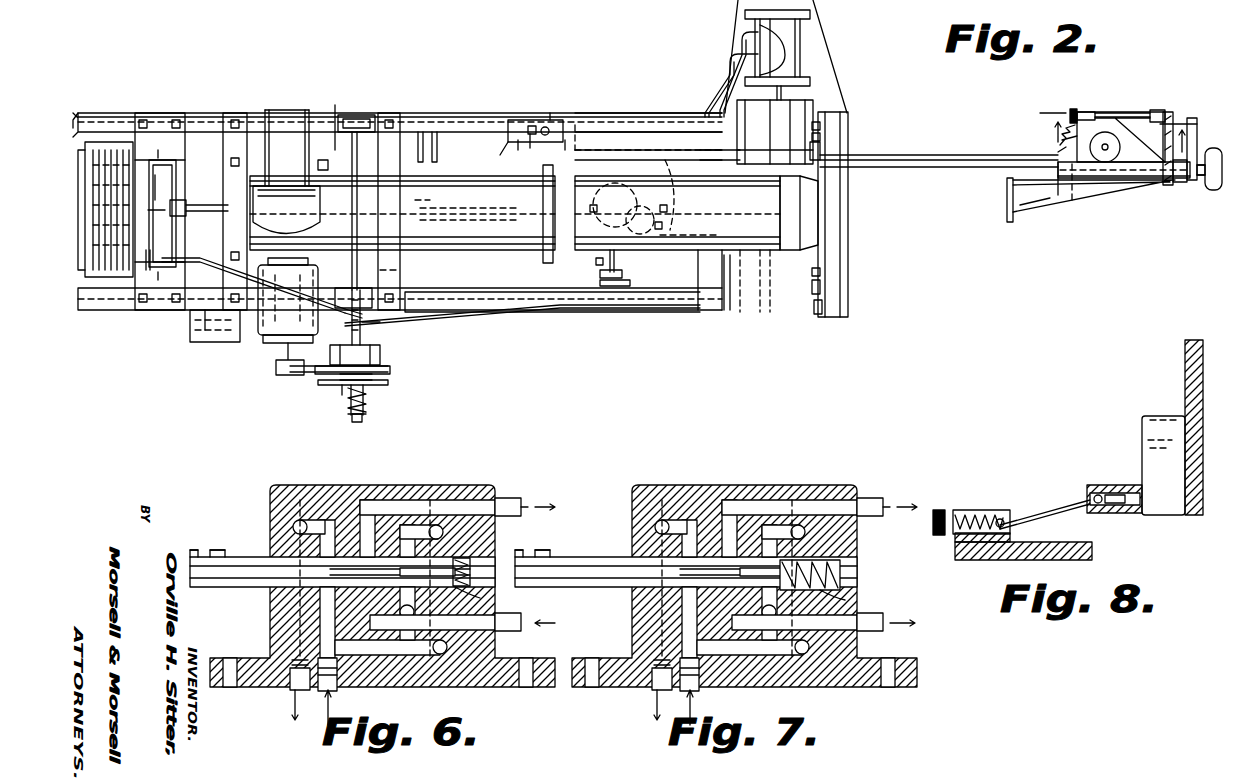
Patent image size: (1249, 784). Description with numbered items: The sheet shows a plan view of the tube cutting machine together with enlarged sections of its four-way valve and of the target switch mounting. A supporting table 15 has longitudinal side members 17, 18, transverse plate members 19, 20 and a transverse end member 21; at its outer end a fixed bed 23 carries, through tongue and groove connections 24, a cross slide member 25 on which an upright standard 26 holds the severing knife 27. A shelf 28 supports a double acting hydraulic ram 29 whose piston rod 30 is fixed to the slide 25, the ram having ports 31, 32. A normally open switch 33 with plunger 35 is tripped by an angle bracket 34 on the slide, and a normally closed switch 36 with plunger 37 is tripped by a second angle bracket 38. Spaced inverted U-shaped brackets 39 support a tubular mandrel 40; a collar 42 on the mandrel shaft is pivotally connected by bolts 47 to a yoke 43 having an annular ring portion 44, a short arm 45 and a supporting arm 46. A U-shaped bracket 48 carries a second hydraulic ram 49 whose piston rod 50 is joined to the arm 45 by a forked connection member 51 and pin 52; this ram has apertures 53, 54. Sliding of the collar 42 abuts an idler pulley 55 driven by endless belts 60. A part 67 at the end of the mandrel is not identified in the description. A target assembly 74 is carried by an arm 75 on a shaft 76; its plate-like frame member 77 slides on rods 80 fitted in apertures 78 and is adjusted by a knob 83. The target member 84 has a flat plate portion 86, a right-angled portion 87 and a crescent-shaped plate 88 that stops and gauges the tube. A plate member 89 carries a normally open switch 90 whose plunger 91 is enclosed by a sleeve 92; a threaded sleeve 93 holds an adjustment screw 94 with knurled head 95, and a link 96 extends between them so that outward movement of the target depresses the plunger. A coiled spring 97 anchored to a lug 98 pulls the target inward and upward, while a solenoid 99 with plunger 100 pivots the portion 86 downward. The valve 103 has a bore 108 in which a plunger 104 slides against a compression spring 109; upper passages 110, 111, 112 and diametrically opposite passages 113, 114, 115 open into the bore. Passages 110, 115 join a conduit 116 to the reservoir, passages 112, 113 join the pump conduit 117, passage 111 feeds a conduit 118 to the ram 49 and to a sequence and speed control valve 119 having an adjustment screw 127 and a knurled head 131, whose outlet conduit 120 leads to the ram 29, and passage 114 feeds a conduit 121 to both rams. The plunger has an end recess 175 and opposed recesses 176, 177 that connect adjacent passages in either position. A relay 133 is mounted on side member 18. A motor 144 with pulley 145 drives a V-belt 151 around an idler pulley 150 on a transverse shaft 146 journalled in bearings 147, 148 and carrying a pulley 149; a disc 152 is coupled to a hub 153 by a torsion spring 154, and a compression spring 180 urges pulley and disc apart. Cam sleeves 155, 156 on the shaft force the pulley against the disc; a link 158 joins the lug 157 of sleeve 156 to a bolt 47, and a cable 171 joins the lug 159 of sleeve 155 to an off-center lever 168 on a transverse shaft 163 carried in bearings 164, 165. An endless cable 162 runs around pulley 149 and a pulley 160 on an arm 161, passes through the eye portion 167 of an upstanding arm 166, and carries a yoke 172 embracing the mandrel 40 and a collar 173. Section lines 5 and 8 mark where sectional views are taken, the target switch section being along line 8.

In FIG. 2, the section line 5 is at (542, 151).
In FIG. 2, the section line 8 is at (1118, 124).
In FIG. 2, the supporting table 15 is at (214, 110).
In FIG. 2, the longitudinal side member 17 is at (458, 112).
In FIG. 2, the longitudinal side member 18 is at (512, 313).
In FIG. 2, the transverse plate member 19 is at (133, 112).
In FIG. 2, the transverse plate member 20 is at (603, 112).
In FIG. 2, the transverse end member 21 is at (848, 208).
In FIG. 2, the fixed transverse bed 23 is at (722, 315).
In FIG. 2, the tongue and groove connections 24 is at (778, 314).
In FIG. 2, the cross slide member 25 is at (738, 314).
In FIG. 2, the upright standard 26 is at (790, 125).
In FIG. 2, the severing knife 27 is at (740, 150).
In FIG. 2, the rearwardly projecting shelf 28 is at (820, 52).
In FIG. 2, the double acting hydraulic ram 29 is at (792, 30).
In FIG. 2, the piston rod 30 is at (783, 95).
In FIG. 2, the port 31 is at (740, 45).
In FIG. 2, the port 32 is at (730, 68).
In FIG. 2, the normally open electrical push button switch 33 is at (822, 152).
In FIG. 2, the angle bracket 34 is at (820, 125).
In FIG. 2, the plunger 35 is at (820, 137).
In FIG. 2, the normally closed electrical push button switch 36 is at (818, 316).
In FIG. 2, the plunger 37 is at (822, 288).
In FIG. 2, the angle bracket 38 is at (820, 272).
In FIG. 2, the inverted U-shaped brackets 39 is at (248, 112).
In FIG. 2, the horizontal tubular mandrel 40 is at (338, 252).
In FIG. 2, the annular collar 42 is at (148, 270).
In FIG. 2, the yoke 43 is at (190, 255).
In FIG. 2, the annular ring portion 44 is at (170, 168).
In FIG. 2, the short arm 45 is at (176, 203).
In FIG. 2, the supporting arm 46 is at (346, 166).
In FIG. 2, the bolts 47 is at (160, 157).
In FIG. 2, the U-shaped bracket 48 is at (352, 165).
In FIG. 2, the double-acting hydraulic ram 49 is at (285, 170).
In FIG. 2, the piston rod 50 is at (214, 214).
In FIG. 2, the forked connection member 51 is at (157, 186).
In FIG. 2, the pin 52 is at (150, 205).
In FIG. 2, the aperture 53 is at (280, 186).
In FIG. 2, the aperture 54 is at (312, 170).
In FIG. 2, the idler pulley 55 is at (78, 112).
In FIG. 2, the endless driving belts 60 is at (112, 292).
In FIG. 2, the end cap 67 is at (780, 206).
In FIG. 2, the target assembly 74 is at (1125, 112).
In FIG. 2, the arm 75 is at (1198, 118).
In FIG. 2, the shaft 76 is at (958, 170).
In FIG. 2, the plate-like frame member 77 is at (1060, 196).
In FIG. 2, the unthreaded apertures 78 is at (1072, 201).
In FIG. 2, the rods 80 is at (1180, 182).
In FIG. 2, the knob 83 is at (1222, 152).
In FIG. 2, the target member 84 is at (1115, 192).
In FIG. 2, the flat plate portion 86 is at (1092, 126).
In FIG. 8, the flat plate portion 86 is at (1093, 550).
In FIG. 2, the right-angled portion 87 is at (1043, 203).
In FIG. 2, the crescent-shaped plate member 88 is at (1005, 204).
In FIG. 2, the rectangular plate member 89 is at (1174, 112).
In FIG. 8, the rectangular plate member 89 is at (1204, 375).
In FIG. 2, the normally open electrical push button switch 90 is at (1160, 110).
In FIG. 8, the normally open electrical push button switch 90 is at (1148, 415).
In FIG. 8, the plunger 91 is at (1116, 493).
In FIG. 8, the sleeve 92 is at (1095, 484).
In FIG. 2, the internally threaded sleeve 93 is at (1086, 112).
In FIG. 8, the internally threaded sleeve 93 is at (990, 510).
In FIG. 8, the adjustment screw 94 is at (958, 512).
In FIG. 2, the knurled head 95 is at (1072, 108).
In FIG. 8, the knurled head 95 is at (938, 508).
In FIG. 2, the link 96 is at (1120, 112).
In FIG. 8, the link 96 is at (1040, 515).
In FIG. 2, the coiled spring 97 is at (1060, 140).
In FIG. 2, the lug 98 is at (1056, 152).
In FIG. 2, the solenoid 99 is at (1100, 138).
In FIG. 2, the plunger 100 is at (1109, 148).
In FIG. 6, the four-way valve 103 is at (358, 485).
In FIG. 7, the four-way valve 103 is at (720, 485).
In FIG. 6, the plunger 104 is at (243, 556).
In FIG. 7, the plunger 104 is at (604, 556).
In FIG. 6, the bore 108 is at (482, 600).
In FIG. 7, the bore 108 is at (847, 600).
In FIG. 6, the coil compression spring 109 is at (470, 580).
In FIG. 7, the coil compression spring 109 is at (842, 572).
In FIG. 6, the passage 110 is at (328, 520).
In FIG. 7, the passage 110 is at (690, 520).
In FIG. 6, the passage 111 is at (372, 500).
In FIG. 7, the passage 111 is at (734, 500).
In FIG. 6, the passage 112 is at (412, 525).
In FIG. 7, the passage 112 is at (774, 525).
In FIG. 6, the passage 113 is at (320, 605).
In FIG. 7, the passage 113 is at (682, 610).
In FIG. 6, the passage 114 is at (375, 658).
In FIG. 7, the passage 114 is at (737, 658).
In FIG. 6, the passage 115 is at (412, 640).
In FIG. 7, the passage 115 is at (774, 640).
In FIG. 6, the conduit 116 is at (290, 698).
In FIG. 7, the conduit 116 is at (652, 698).
In FIG. 6, the conduit 117 is at (325, 702).
In FIG. 7, the conduit 117 is at (687, 702).
In FIG. 2, the conduit 118 is at (322, 110).
In FIG. 6, the conduit 118 is at (506, 503).
In FIG. 7, the conduit 118 is at (866, 503).
In FIG. 2, the combination sequence and speed control valve 119 is at (535, 118).
In FIG. 2, the conduit 120 is at (612, 138).
In FIG. 2, the conduit 121 is at (438, 160).
In FIG. 6, the conduit 121 is at (510, 632).
In FIG. 7, the conduit 121 is at (866, 632).
In FIG. 2, the adjustment screw 127 is at (544, 148).
In FIG. 2, the knurled head 131 is at (550, 112).
In FIG. 2, the solenoid actuated relay 133 is at (200, 342).
In FIG. 2, the electric motor 144 is at (262, 335).
In FIG. 2, the pulley 145 is at (288, 376).
In FIG. 2, the transverse shaft 146 is at (360, 422).
In FIG. 2, the bearing 147 is at (352, 114).
In FIG. 2, the bearing 148 is at (348, 290).
In FIG. 2, the pulley 149 is at (421, 196).
In FIG. 2, the idler pulley 150 is at (381, 355).
In FIG. 2, the driving V-belt 151 is at (303, 376).
In FIG. 2, the disc 152 is at (390, 372).
In FIG. 2, the hub 153 is at (370, 414).
In FIG. 2, the torsion spring 154 is at (370, 402).
In FIG. 2, the cam sleeve 155 is at (350, 330).
In FIG. 2, the cam sleeve 156 is at (366, 316).
In FIG. 2, the upstanding lug 157 is at (400, 278).
In FIG. 2, the link 158 is at (195, 312).
In FIG. 2, the downwardly projecting lug 159 is at (372, 328).
In FIG. 2, the pulley 160 is at (712, 280).
In FIG. 2, the arm 161 is at (680, 184).
In FIG. 2, the endless cable 162 is at (470, 204).
In FIG. 2, the transverse shaft 163 is at (595, 262).
In FIG. 2, the bearing 164 is at (622, 272).
In FIG. 2, the bearing 165 is at (622, 174).
In FIG. 2, the upstanding arm 166 is at (642, 210).
In FIG. 2, the eye portion 167 is at (622, 222).
In FIG. 2, the off-center lever 168 is at (632, 282).
In FIG. 2, the cable 171 is at (458, 320).
In FIG. 2, the yoke 172 is at (540, 262).
In FIG. 2, the collar 173 is at (690, 240).
In FIG. 6, the recess 175 is at (205, 555).
In FIG. 7, the recess 175 is at (537, 556).
In FIG. 6, the recess 176 is at (395, 568).
In FIG. 7, the recess 176 is at (725, 568).
In FIG. 6, the recess 177 is at (404, 572).
In FIG. 7, the recess 177 is at (741, 572).
In FIG. 2, the compression spring 180 is at (335, 395).